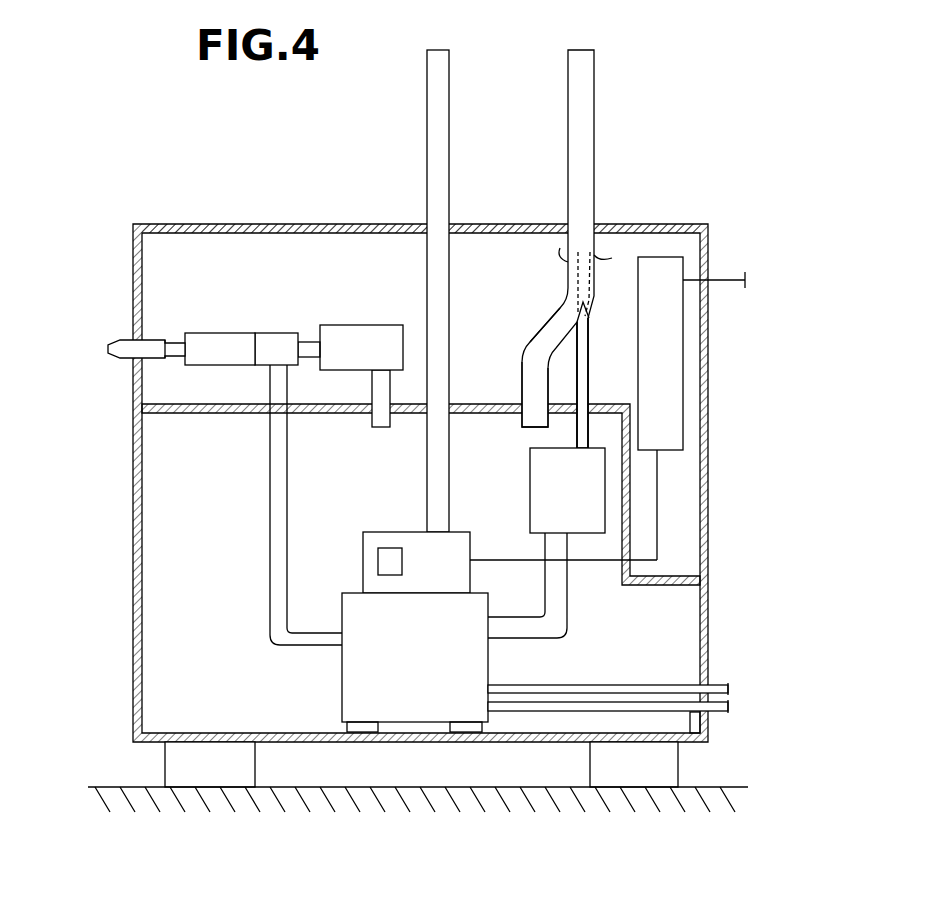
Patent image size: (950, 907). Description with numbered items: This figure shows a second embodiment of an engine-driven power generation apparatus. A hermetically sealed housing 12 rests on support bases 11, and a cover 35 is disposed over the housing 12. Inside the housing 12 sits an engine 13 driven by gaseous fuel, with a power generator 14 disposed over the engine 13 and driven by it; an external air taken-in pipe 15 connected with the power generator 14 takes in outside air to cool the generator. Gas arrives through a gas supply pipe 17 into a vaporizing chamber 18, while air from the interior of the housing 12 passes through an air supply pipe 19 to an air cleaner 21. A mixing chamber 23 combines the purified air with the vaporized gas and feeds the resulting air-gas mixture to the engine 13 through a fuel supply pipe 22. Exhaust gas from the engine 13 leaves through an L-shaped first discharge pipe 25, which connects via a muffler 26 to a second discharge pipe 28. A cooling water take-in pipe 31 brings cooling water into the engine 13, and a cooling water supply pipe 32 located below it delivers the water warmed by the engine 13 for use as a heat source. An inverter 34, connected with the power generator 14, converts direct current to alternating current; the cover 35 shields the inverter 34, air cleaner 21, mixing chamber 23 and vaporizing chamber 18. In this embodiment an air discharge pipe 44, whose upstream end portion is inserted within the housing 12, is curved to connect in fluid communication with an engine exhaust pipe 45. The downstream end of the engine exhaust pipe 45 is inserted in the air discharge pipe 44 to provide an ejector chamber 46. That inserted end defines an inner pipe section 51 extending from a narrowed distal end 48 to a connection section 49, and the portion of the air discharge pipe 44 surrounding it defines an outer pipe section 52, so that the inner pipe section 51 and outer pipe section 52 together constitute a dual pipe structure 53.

The support bases 11 is at (165, 765).
The hermetically sealed housing 12 is at (133, 598).
The engine 13 is at (342, 693).
The power generator 14 is at (363, 562).
The external air taken-in pipe 15 is at (427, 156).
The gas supply pipe 17 is at (155, 339).
The vaporizing chamber 18 is at (233, 333).
The air supply pipe 19 is at (370, 385).
The air cleaner 21 is at (359, 325).
The fuel supply pipe 22 is at (270, 515).
The mixing chamber 23 is at (285, 333).
The first discharge pipe 25 is at (568, 612).
The muffler 26 is at (530, 503).
The second discharge pipe 28 is at (565, 428).
The cooling water take-in pipe 31 is at (677, 684).
The cooling water supply pipe 32 is at (694, 736).
The inverter 34 is at (683, 377).
The cover 35 is at (270, 224).
The air discharge pipe 44 is at (594, 115).
The engine exhaust pipe 45 is at (556, 367).
The ejector chamber 46 is at (551, 292).
The narrowed distal end 48 is at (594, 200).
The connection section 49 is at (587, 318).
The inner pipe section 51 is at (588, 316).
The outer pipe section 52 is at (568, 243).
The dual pipe structure 53 is at (600, 248).